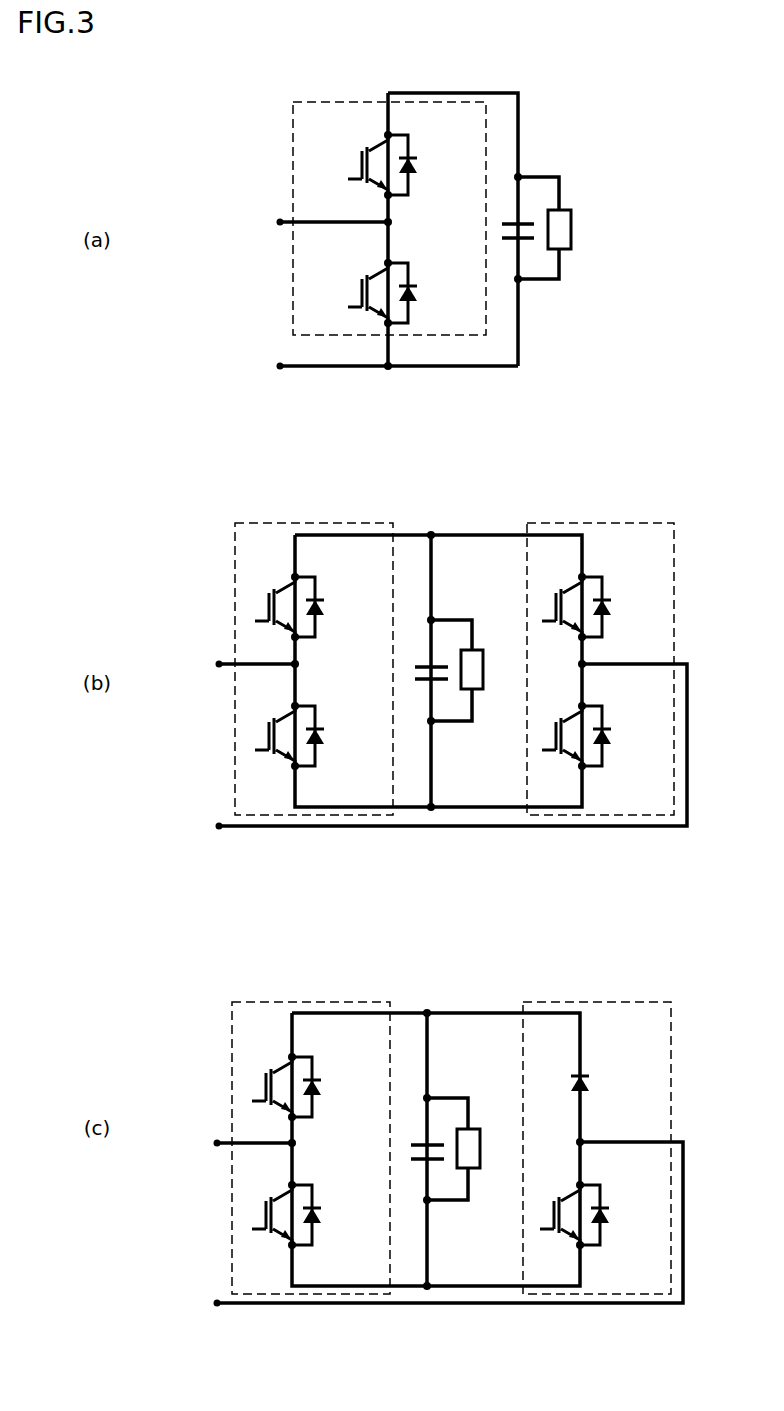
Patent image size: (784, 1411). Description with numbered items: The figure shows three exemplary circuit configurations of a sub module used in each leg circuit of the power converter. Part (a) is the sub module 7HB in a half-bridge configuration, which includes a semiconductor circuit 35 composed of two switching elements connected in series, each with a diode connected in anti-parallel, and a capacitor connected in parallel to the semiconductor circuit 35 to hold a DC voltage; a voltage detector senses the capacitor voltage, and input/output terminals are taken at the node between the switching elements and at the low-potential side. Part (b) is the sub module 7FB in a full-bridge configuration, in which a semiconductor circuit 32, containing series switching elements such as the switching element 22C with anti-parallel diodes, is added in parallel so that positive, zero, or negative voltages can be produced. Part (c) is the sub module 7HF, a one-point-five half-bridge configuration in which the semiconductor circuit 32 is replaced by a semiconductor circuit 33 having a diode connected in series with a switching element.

The sub module in half-bridge configuration 7HB is at (580, 72).
The sub module in full-bridge configuration 7FB is at (617, 453).
The sub module in 1.5 half-bridge configuration 7HF is at (615, 932).
The switching element 22C is at (557, 590).
The semiconductor circuit 32 is at (590, 524).
The semiconductor circuit 33 is at (587, 1002).
The semiconductor circuit 35 is at (347, 102).